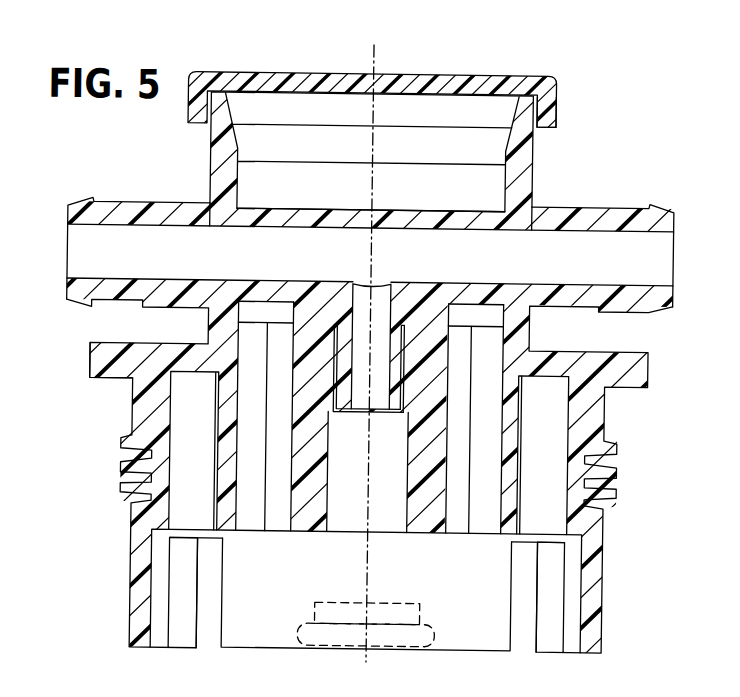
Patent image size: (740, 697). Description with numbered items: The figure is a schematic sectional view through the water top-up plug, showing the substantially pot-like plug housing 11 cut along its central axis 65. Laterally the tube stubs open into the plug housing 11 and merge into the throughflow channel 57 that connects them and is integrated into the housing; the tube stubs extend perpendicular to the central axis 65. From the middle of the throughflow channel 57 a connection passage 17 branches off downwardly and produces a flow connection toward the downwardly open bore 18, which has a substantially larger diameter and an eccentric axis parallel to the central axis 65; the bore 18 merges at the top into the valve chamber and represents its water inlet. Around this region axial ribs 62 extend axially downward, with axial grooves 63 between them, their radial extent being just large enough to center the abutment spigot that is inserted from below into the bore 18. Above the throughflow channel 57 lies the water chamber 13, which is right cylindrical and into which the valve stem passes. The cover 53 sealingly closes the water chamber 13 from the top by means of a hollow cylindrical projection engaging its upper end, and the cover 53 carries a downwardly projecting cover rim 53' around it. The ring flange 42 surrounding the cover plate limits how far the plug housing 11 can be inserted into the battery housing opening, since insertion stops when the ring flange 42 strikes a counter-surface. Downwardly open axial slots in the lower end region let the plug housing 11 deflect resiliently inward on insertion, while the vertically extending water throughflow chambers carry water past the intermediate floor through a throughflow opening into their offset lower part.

The plug housing 11 is at (130, 407).
The water chamber 13 is at (487, 180).
The connection passage 17 is at (391, 284).
The bore 18 is at (394, 512).
The ring flange 42 is at (89, 354).
The cover 53 is at (372, 79).
The cover rim 53' is at (567, 115).
The throughflow channel 57 is at (355, 217).
The axial ribs 62 is at (343, 395).
The axial grooves 63 is at (404, 388).
The central axis 65 is at (372, 62).